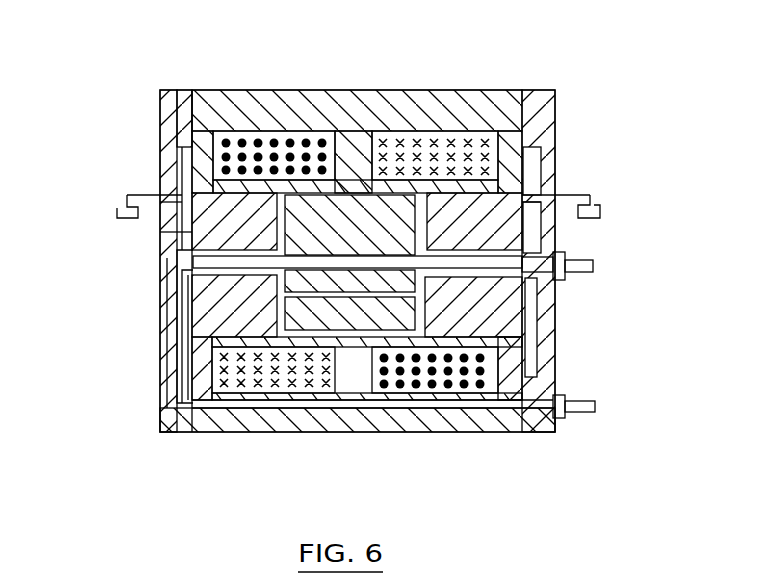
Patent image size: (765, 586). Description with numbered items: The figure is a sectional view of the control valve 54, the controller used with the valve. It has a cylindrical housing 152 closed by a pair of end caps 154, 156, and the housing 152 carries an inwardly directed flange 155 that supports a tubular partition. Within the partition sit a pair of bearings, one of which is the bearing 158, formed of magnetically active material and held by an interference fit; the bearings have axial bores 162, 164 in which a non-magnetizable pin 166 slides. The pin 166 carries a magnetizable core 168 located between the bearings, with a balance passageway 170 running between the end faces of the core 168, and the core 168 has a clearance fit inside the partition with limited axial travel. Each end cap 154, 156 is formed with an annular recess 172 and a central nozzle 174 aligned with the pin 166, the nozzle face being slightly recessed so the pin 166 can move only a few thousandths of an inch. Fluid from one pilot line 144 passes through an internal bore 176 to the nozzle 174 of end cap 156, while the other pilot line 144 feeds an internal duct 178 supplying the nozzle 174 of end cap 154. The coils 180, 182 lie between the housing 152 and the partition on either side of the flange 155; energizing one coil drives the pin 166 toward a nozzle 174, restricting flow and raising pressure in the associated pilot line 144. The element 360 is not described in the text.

The control valve 54 is at (192, 74).
The pilot line 144 is at (580, 258).
The cylindrical housing 152 is at (376, 100).
The end cap 154 is at (546, 100).
The inwardly directed flange 155 is at (352, 130).
The end cap 156 is at (185, 97).
The bearing 158 is at (222, 232).
The axial bore 162 is at (185, 318).
The axial bore 164 is at (495, 280).
The pin 166 is at (243, 268).
The magnetizable core 168 is at (350, 225).
The balance passageway 170 is at (350, 297).
The annular recess 172 is at (190, 362).
The nozzle 174 is at (245, 262).
The internal bore 176 is at (545, 280).
The internal duct 178 is at (476, 410).
The coil 180 is at (250, 135).
The coil 182 is at (443, 137).
The wall web 360 is at (533, 198).